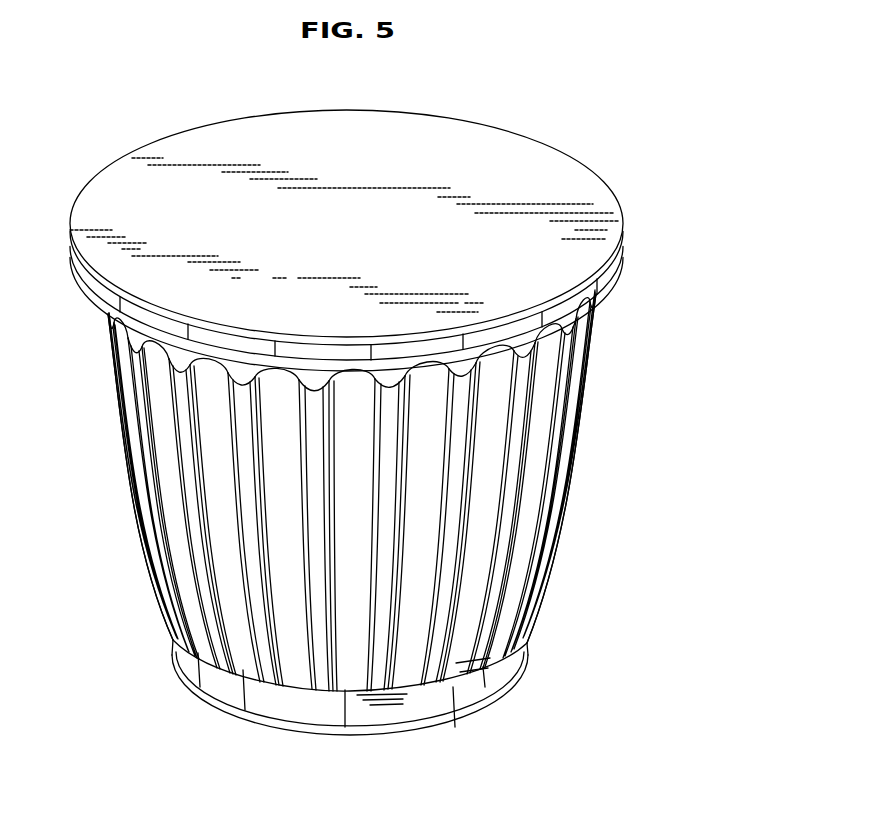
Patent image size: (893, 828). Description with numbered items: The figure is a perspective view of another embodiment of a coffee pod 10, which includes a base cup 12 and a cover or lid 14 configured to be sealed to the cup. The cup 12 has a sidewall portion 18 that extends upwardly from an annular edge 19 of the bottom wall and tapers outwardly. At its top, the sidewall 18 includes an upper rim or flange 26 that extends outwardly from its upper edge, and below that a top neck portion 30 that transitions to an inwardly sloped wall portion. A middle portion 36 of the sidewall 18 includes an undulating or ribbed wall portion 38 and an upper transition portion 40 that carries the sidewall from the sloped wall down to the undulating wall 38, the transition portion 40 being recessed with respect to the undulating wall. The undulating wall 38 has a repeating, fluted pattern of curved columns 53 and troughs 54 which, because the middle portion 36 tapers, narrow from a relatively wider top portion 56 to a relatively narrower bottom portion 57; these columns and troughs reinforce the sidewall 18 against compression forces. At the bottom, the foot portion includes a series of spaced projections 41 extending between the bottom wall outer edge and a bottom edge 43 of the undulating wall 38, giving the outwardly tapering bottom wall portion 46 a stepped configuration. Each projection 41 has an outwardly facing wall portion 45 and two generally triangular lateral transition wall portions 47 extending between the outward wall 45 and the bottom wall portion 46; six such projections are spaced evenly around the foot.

The coffee pod 10 is at (651, 174).
The base cup 12 is at (567, 477).
The cover or lid 14 is at (519, 170).
The sidewall portion 18 is at (558, 518).
The annular edge 19 is at (508, 683).
The upper rim or flange 26 is at (74, 256).
The top neck portion 30 is at (590, 306).
The middle portion 36 is at (122, 402).
The undulating or ribbed wall portion 38 is at (520, 556).
The upper transition portion 40 is at (168, 367).
The spaced projections 41 is at (392, 712).
The bottom edge 43 is at (170, 643).
The outwardly facing wall portion 45 is at (215, 683).
The outwardly tapering bottom wall portion 46 is at (265, 700).
The lateral transition wall portions 47 is at (240, 718).
The curved columns 53 is at (217, 492).
The troughs 54 is at (243, 542).
The top portion 56 is at (533, 402).
The bottom portion 57 is at (500, 608).